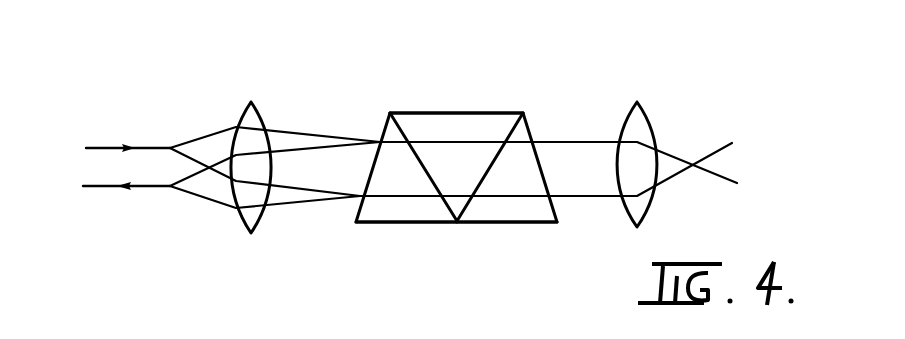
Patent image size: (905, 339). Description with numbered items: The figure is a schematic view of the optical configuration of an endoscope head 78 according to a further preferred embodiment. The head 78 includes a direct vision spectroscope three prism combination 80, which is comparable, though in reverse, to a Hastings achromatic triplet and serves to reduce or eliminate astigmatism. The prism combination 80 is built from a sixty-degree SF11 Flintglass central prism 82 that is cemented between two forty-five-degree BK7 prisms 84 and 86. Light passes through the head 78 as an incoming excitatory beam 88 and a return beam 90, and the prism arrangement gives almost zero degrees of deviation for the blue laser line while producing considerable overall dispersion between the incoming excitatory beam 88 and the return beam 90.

The head 78 is at (210, 96).
The direct vision spectroscope three prism combination 80 is at (417, 94).
The central prism 82 is at (472, 112).
The BK7 prism 84 is at (408, 223).
The BK7 prism 86 is at (513, 223).
The incoming excitatory beam 88 is at (114, 143).
The return beam 90 is at (105, 190).